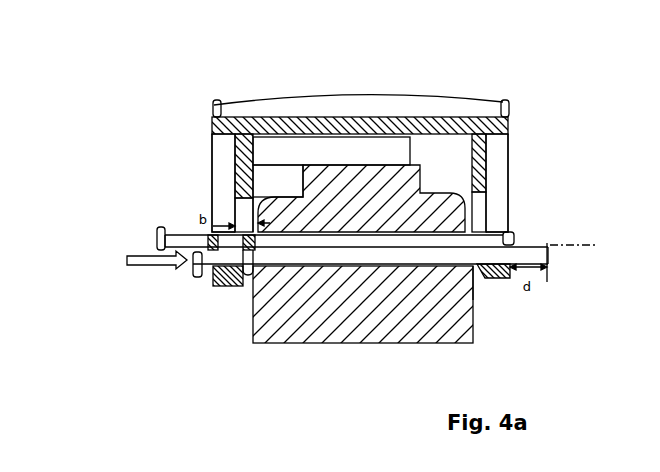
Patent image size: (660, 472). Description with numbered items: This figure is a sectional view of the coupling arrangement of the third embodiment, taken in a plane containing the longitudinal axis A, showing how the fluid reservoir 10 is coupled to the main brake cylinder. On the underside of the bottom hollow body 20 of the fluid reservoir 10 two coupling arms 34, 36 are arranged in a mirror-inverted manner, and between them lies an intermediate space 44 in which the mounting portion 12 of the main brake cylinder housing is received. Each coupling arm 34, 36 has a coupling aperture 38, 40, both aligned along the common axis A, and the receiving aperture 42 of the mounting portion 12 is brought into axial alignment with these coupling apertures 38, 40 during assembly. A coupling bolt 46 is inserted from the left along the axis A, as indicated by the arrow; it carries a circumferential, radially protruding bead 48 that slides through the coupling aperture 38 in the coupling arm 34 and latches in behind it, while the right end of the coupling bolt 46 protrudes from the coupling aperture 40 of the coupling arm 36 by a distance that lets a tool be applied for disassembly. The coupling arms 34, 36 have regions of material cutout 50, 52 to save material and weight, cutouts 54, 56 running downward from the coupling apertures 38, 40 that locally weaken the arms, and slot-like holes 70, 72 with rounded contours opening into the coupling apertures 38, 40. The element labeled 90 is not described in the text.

The fluid reservoir 10 is at (512, 116).
The mounting portion 12 is at (353, 343).
The bottom hollow body 20 is at (212, 119).
The coupling arm 34 is at (234, 187).
The coupling arm 36 is at (488, 183).
The coupling aperture 38 is at (209, 286).
The coupling aperture 40 is at (492, 280).
The receiving aperture 42 is at (290, 343).
The intermediate space 44 is at (275, 146).
The coupling bolt 46 is at (157, 248).
The bead 48 is at (197, 256).
The material cutout 50 is at (222, 154).
The material cutout 52 is at (498, 152).
The cutout 54 is at (245, 292).
The cutout 56 is at (477, 283).
The slot-like hole 70 is at (234, 213).
The slot-like hole 72 is at (482, 202).
The seal ring 90 is at (157, 236).
The axis A is at (558, 246).